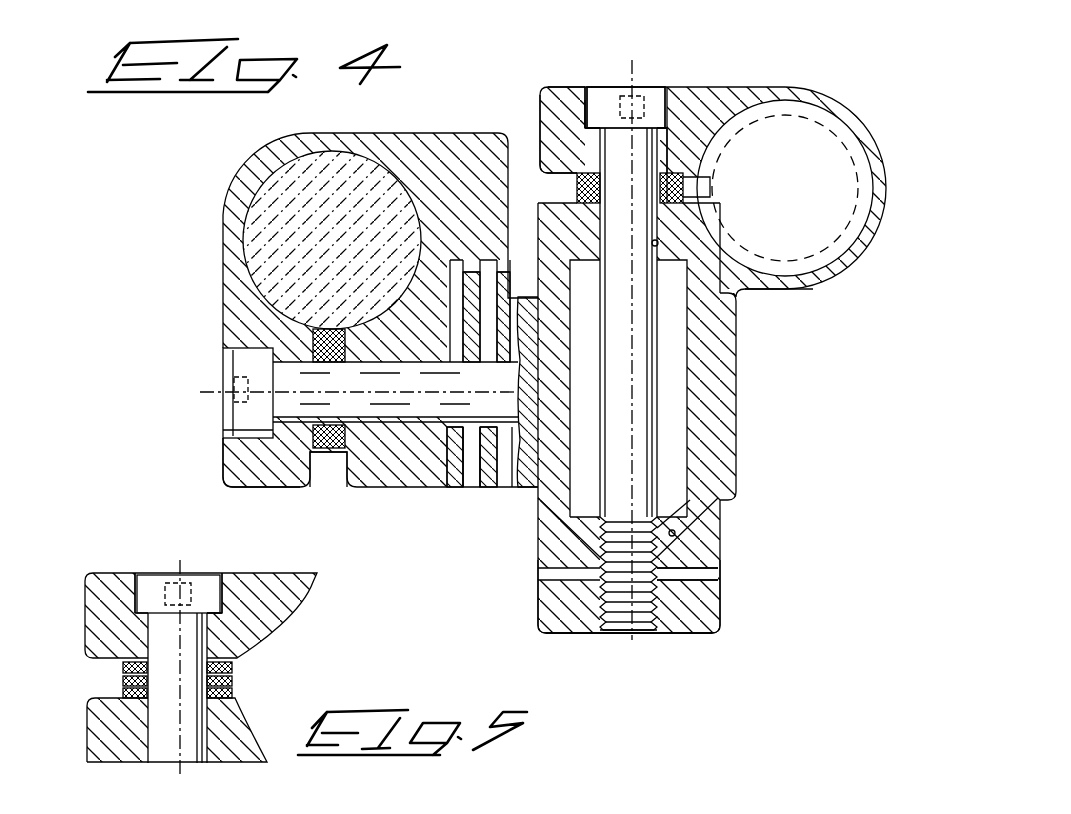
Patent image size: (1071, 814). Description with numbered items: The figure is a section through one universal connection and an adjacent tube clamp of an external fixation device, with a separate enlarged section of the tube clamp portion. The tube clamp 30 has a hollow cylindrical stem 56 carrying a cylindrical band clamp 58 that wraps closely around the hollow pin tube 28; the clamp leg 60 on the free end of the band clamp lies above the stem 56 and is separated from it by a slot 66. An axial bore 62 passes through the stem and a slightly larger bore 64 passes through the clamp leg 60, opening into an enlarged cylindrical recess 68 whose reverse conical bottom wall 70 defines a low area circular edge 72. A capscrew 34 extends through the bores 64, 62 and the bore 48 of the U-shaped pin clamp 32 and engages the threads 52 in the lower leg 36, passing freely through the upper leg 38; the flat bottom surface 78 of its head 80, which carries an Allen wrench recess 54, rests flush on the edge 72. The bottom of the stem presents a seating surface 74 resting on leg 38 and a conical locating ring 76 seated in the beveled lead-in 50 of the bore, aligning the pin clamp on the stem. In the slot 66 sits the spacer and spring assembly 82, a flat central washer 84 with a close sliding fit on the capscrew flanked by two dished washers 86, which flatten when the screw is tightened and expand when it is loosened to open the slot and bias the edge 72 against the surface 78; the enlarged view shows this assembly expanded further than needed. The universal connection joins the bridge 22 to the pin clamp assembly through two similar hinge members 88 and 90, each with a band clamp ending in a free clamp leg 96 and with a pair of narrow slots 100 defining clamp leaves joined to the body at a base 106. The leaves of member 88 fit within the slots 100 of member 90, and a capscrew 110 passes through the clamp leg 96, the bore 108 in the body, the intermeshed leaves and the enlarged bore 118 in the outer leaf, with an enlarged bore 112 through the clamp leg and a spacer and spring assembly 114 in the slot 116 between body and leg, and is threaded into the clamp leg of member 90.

In FIG. 4, the bridge 22 is at (262, 238).
In FIG. 4, the pin tube 28 is at (832, 240).
In FIG. 4, the tube clamp 30 is at (812, 293).
In FIG. 4, the pin clamp 32 is at (585, 632).
In FIG. 4, the capscrew 34 is at (638, 452).
In FIG. 5, the capscrew 34 is at (185, 738).
In FIG. 4, the leg 36 is at (545, 628).
In FIG. 4, the leg 38 is at (541, 560).
In FIG. 4, the bore 48 is at (706, 574).
In FIG. 4, the beveled lead-in 50 is at (662, 566).
In FIG. 4, the threads 52 is at (608, 632).
In FIG. 4, the recess 54 is at (232, 397).
In FIG. 4, the stem 56 is at (705, 383).
In FIG. 4, the band clamp 58 is at (884, 182).
In FIG. 4, the clamp leg 60 is at (587, 125).
In FIG. 4, the axial bore 62 is at (660, 246).
In FIG. 4, the bore 64 is at (580, 142).
In FIG. 4, the slot 66 is at (550, 176).
In FIG. 5, the slot 66 is at (103, 683).
In FIG. 4, the cylindrical recess 68 is at (674, 112).
In FIG. 5, the cylindrical recess 68 is at (226, 592).
In FIG. 4, the reverse conical bottom wall 70 is at (584, 130).
In FIG. 5, the reverse conical bottom wall 70 is at (131, 620).
In FIG. 4, the low area circular edge 72 is at (586, 127).
In FIG. 4, the seating surface 74 is at (713, 518).
In FIG. 4, the conical locating ring 76 is at (676, 533).
In FIG. 4, the flat bottom surface 78 is at (645, 128).
In FIG. 5, the flat bottom surface 78 is at (170, 623).
In FIG. 4, the capscrew head 80 is at (607, 98).
In FIG. 5, the capscrew head 80 is at (149, 596).
In FIG. 4, the spacer and spring assembly 82 is at (570, 188).
In FIG. 4, the flat central washer 84 is at (700, 187).
In FIG. 5, the flat central washer 84 is at (233, 681).
In FIG. 4, the dished washers 86 is at (688, 179).
In FIG. 5, the dished washers 86 is at (233, 666).
In FIG. 4, the hinge member 88 is at (246, 163).
In FIG. 4, the hinge member 90 is at (740, 319).
In FIG. 4, the clamp leg 96 is at (236, 470).
In FIG. 4, the slots 100 is at (484, 298).
In FIG. 4, the base 106 is at (486, 292).
In FIG. 4, the bore 108 is at (412, 423).
In FIG. 4, the capscrew 110 is at (405, 393).
In FIG. 4, the enlarged bore 112 is at (308, 428).
In FIG. 4, the spacer and spring assembly 114 is at (329, 328).
In FIG. 4, the slot 116 is at (330, 466).
In FIG. 4, the enlarged cylindrical bore 118 is at (445, 432).